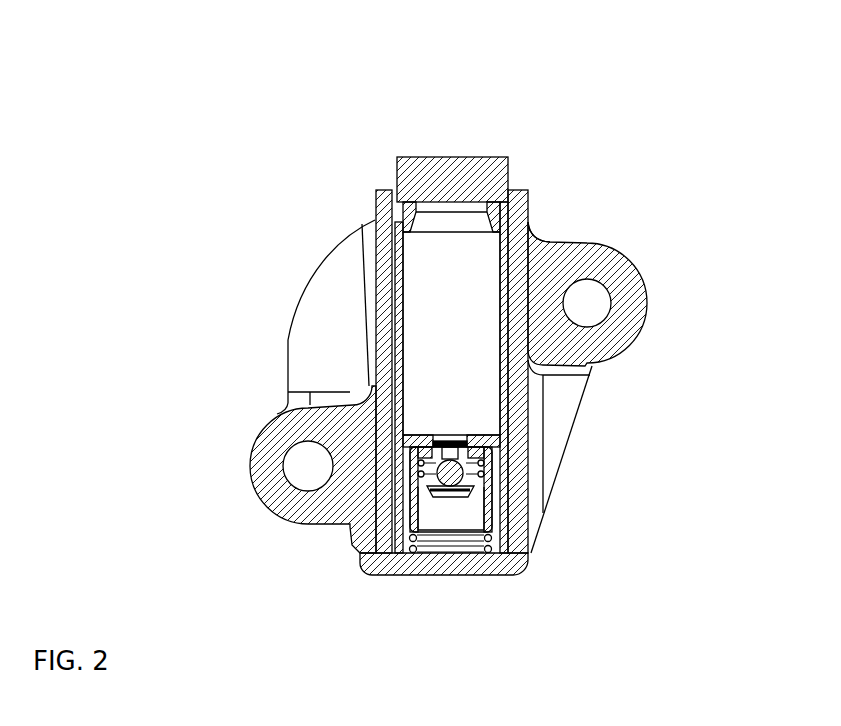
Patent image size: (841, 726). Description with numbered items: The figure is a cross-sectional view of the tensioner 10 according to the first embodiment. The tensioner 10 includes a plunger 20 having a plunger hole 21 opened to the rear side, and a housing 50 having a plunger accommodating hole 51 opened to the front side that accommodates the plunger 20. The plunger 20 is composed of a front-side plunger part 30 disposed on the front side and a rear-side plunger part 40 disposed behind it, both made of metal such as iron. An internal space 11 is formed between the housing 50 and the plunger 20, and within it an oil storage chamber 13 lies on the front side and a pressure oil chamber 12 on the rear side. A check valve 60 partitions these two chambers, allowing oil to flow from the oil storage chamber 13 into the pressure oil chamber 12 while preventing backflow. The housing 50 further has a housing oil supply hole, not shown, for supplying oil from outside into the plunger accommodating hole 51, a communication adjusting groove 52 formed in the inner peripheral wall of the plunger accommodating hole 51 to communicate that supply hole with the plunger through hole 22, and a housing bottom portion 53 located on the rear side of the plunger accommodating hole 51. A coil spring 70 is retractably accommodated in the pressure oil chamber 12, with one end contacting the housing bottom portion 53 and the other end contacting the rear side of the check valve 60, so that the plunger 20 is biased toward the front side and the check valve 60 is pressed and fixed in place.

The tensioner 10 is at (229, 127).
The internal space 11 is at (160, 333).
The pressure oil chamber 12 is at (263, 430).
The oil storage chamber 13 is at (417, 327).
The plunger 20 is at (352, 65).
The plunger hole 21 is at (318, 402).
The plunger through hole 22 is at (382, 295).
The front-side plunger part 30 is at (450, 182).
The rear-side plunger part 40 is at (380, 190).
The housing 50 is at (627, 302).
The plunger accommodating hole 51 is at (503, 401).
The communication adjusting groove 52 is at (512, 260).
The housing bottom portion 53 is at (480, 575).
The check valve 60 is at (428, 488).
The coil spring 70 is at (493, 467).